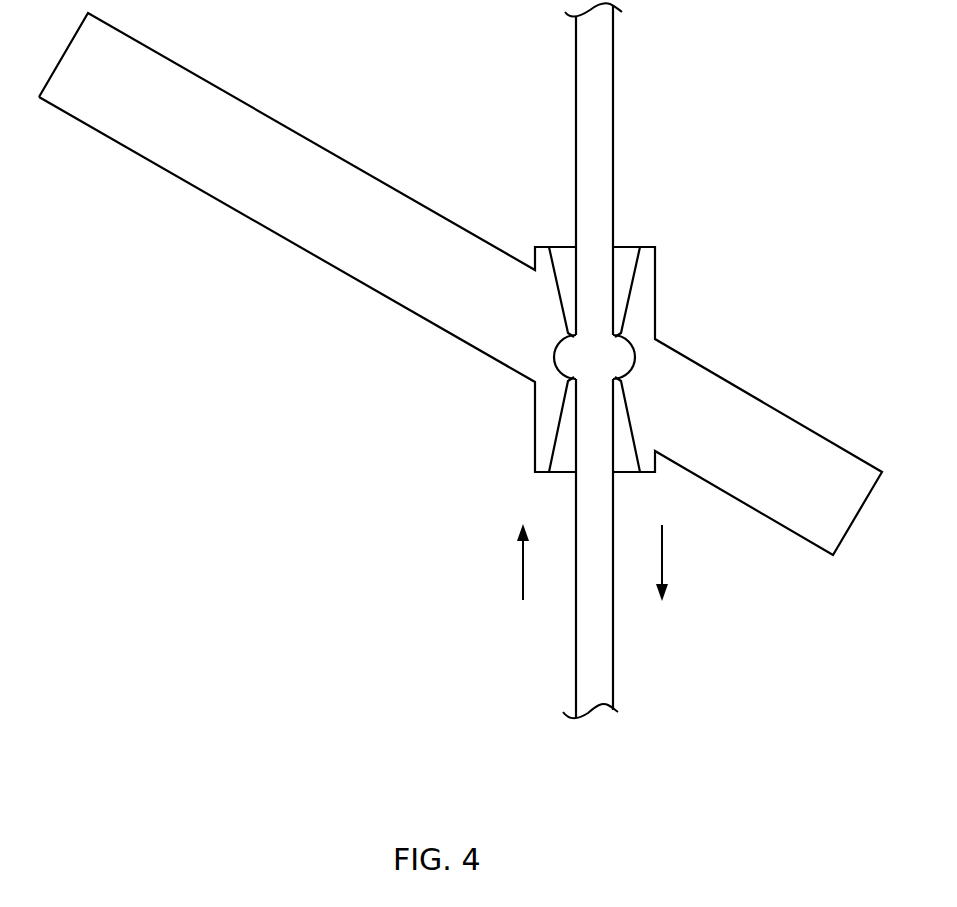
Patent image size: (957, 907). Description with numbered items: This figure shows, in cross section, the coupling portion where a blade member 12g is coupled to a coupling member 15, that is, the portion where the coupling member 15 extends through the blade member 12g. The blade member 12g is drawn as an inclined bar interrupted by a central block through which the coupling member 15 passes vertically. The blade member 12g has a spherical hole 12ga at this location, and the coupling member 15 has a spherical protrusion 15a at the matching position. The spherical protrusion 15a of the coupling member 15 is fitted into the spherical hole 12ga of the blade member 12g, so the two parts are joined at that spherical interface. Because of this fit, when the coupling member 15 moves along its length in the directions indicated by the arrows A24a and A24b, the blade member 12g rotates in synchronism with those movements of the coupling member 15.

The blade member 12g is at (355, 166).
The spherical hole 12ga is at (558, 381).
The coupling member 15 is at (616, 142).
The spherical protrusion 15a is at (605, 358).
The arrow A24b is at (521, 584).
The arrow A24a is at (661, 584).